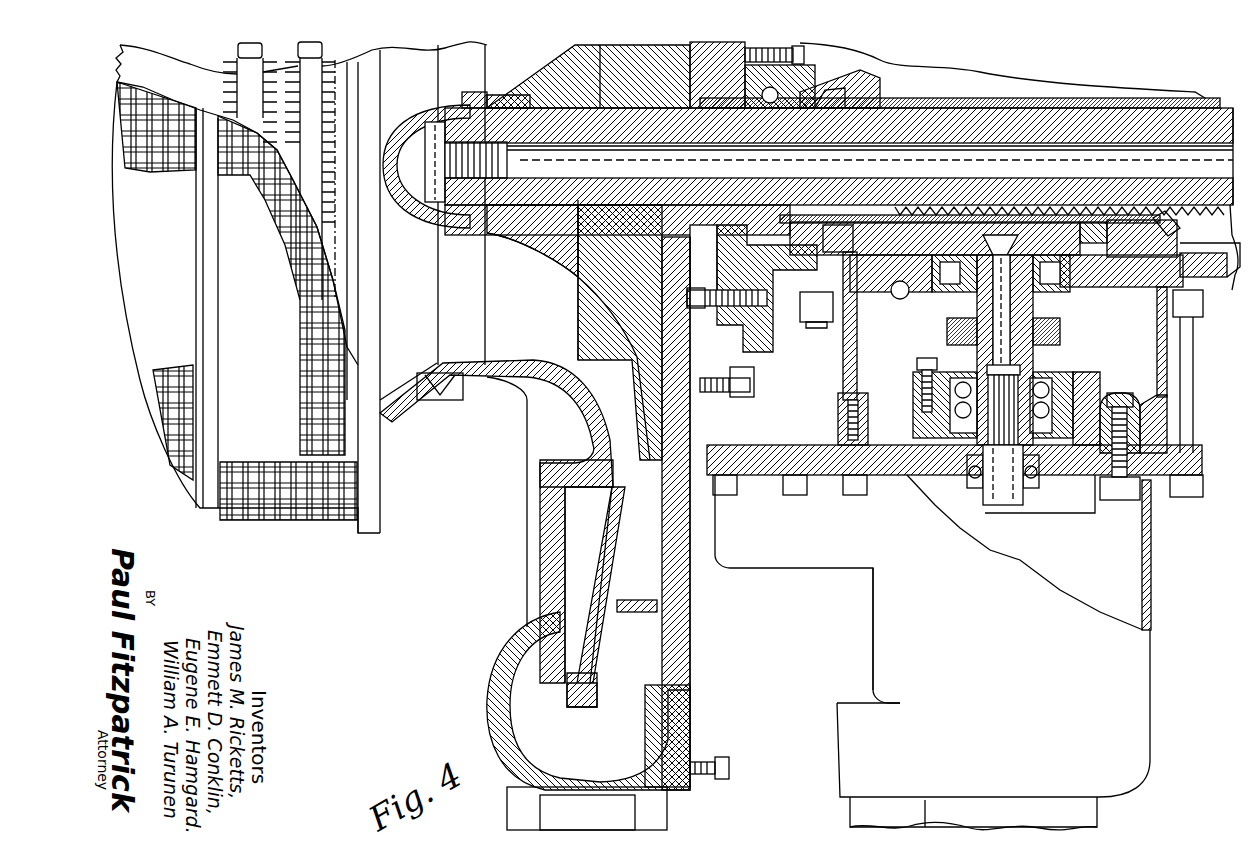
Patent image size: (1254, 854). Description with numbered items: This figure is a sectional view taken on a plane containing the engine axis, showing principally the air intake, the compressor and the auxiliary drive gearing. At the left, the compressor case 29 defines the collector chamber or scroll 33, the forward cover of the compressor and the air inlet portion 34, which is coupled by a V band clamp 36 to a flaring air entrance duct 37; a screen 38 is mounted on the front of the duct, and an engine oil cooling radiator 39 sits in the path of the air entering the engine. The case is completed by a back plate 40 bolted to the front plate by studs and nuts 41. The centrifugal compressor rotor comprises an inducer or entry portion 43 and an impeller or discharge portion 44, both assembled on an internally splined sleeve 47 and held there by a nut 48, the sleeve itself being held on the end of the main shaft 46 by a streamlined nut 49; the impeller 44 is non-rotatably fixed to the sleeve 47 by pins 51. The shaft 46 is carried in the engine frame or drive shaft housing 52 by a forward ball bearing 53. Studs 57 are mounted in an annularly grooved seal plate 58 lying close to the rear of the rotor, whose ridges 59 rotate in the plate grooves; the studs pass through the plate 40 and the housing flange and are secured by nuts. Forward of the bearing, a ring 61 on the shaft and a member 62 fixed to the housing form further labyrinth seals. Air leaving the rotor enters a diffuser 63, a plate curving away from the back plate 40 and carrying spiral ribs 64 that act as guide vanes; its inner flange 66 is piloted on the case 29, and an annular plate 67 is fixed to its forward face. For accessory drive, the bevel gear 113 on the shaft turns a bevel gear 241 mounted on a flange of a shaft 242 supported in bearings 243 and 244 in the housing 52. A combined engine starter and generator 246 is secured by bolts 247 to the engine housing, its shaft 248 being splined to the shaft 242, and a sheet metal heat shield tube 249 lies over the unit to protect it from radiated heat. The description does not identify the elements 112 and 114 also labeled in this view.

The compressor case 29 is at (495, 695).
The collector chamber or scroll 33 is at (660, 730).
The air inlet portion 34 is at (470, 364).
The V band clamp 36 is at (440, 400).
The flaring air entrance duct 37 is at (398, 380).
The screen 38 is at (282, 512).
The engine oil cooling radiator 39 is at (236, 78).
The back plate 40 is at (686, 632).
The studs and nuts 41 is at (740, 781).
The inducer or entry portion 43 is at (538, 72).
The impeller or discharge portion 44 is at (638, 345).
The main shaft 46 is at (919, 112).
The internally splined sleeve 47 is at (498, 96).
The nut 48 is at (464, 95).
The streamlined nut 49 is at (432, 222).
The pins 51 is at (668, 145).
The engine frame or drive shaft housing 52 is at (828, 450).
The forward ball bearing 53 is at (780, 95).
The studs 57 is at (755, 384).
The seal plate 58 is at (680, 338).
The ridges 59 is at (664, 290).
The ring 61 is at (744, 72).
The member 62 is at (798, 312).
The diffuser 63 is at (618, 566).
The spiral ribs 64 is at (636, 600).
The flange 66 is at (612, 515).
The annular plate 67 is at (545, 608).
The tube 112 is at (1138, 98).
The bevel gear 113 is at (842, 100).
The wedge 114 is at (825, 88).
The bevel gear 241 is at (1175, 248).
The shaft 242 is at (1040, 310).
The bearing 243 is at (948, 290).
The bearing 244 is at (960, 372).
The combined engine starter and generator 246 is at (1140, 595).
The bolts 247 is at (1135, 500).
The shaft 248 is at (1032, 380).
The sheet metal heat shield tube 249 is at (875, 616).